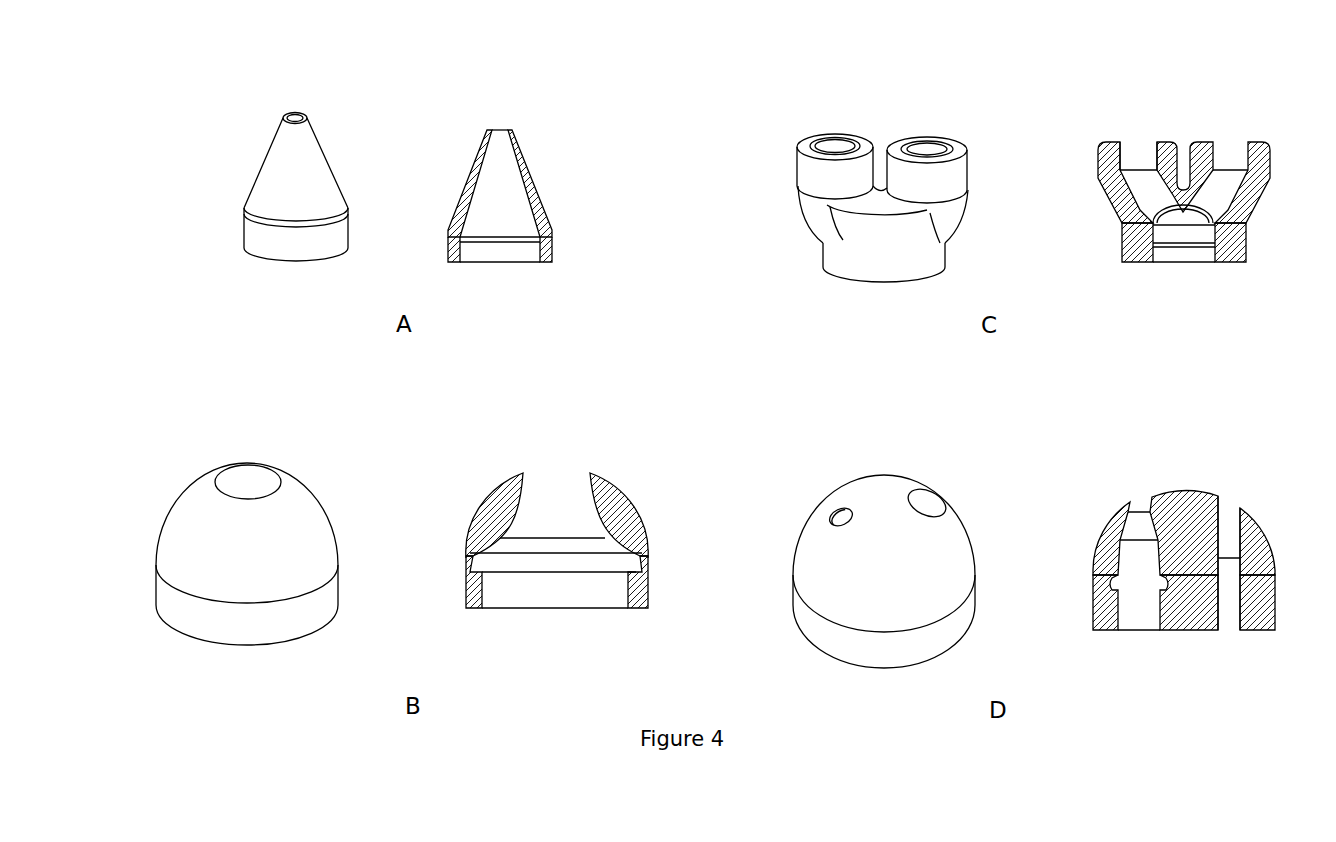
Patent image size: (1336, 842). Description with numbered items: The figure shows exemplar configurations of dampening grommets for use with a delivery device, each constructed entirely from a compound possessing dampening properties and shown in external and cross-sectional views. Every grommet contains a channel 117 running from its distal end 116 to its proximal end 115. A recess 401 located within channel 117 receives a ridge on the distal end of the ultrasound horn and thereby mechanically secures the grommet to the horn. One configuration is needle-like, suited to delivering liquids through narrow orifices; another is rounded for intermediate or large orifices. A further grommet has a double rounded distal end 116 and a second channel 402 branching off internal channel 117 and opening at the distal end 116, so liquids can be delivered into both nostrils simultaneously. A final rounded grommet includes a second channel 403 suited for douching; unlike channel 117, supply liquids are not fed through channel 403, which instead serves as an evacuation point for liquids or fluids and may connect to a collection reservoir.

The proximal end 115 is at (232, 225).
The distal end 116 is at (232, 113).
The channel 117 is at (505, 200).
The recess 401 is at (545, 236).
The second channel 402 is at (1137, 155).
The second channel 403 is at (1230, 620).